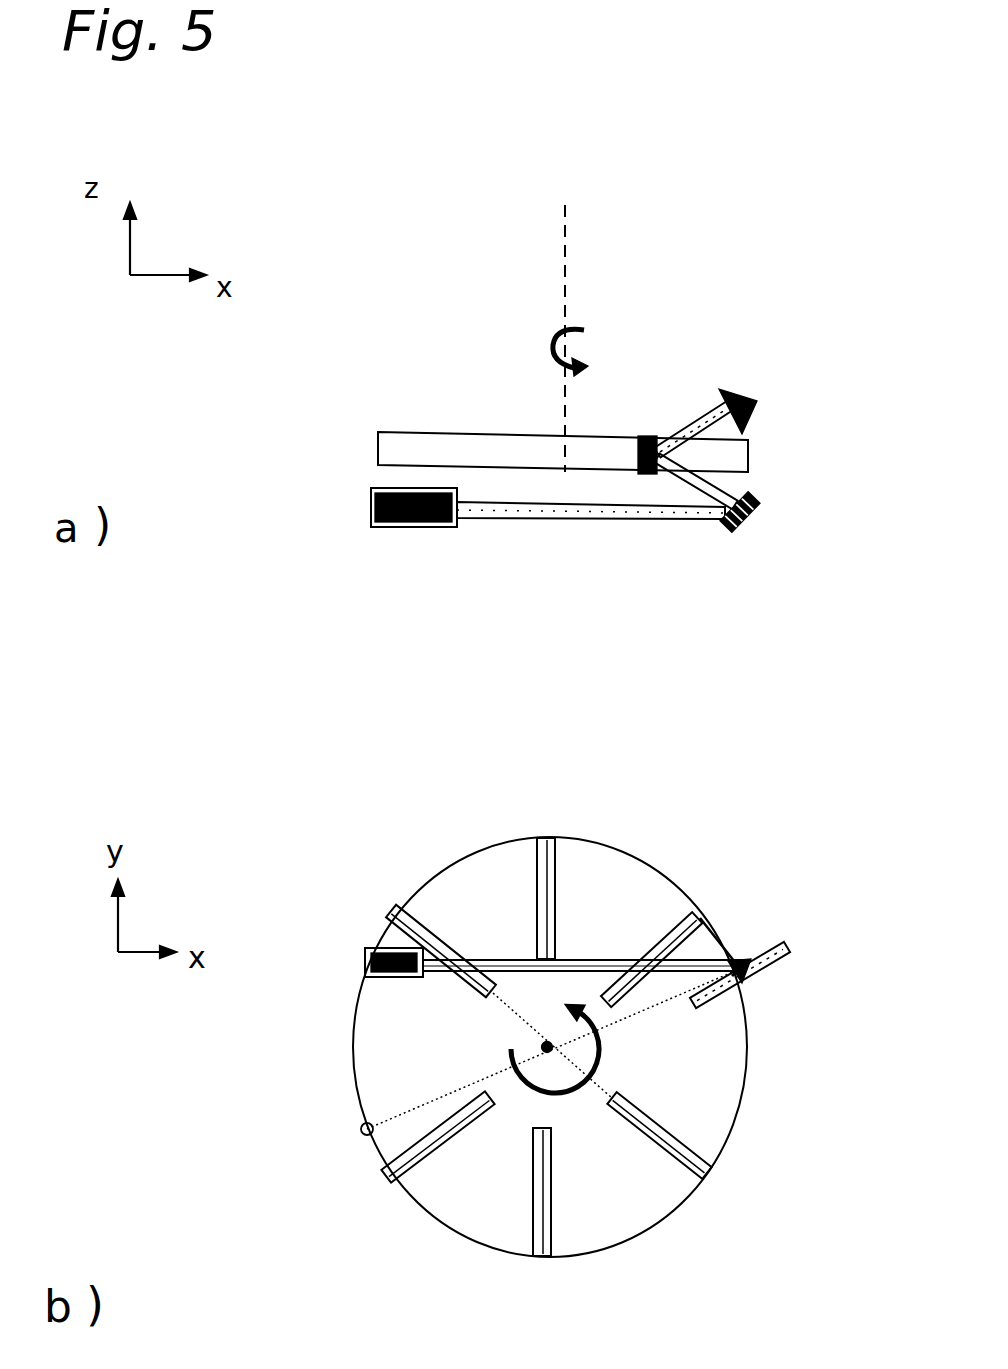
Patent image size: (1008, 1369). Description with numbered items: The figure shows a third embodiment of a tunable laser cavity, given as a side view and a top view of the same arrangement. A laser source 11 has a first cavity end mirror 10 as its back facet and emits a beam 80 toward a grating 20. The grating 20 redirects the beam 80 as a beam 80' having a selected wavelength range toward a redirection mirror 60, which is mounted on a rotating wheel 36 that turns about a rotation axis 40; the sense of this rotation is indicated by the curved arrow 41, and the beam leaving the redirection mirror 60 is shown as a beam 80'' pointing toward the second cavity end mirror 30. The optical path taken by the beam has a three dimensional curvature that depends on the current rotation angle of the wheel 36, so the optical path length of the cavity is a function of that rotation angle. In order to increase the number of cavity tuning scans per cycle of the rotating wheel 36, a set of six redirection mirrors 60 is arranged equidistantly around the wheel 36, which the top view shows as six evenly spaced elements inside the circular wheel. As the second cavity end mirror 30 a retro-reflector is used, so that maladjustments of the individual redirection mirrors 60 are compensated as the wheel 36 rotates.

The first cavity end mirror 10 is at (368, 507).
The laser source 11 is at (413, 528).
The grating 20 is at (750, 528).
The second cavity end mirror 30 is at (760, 410).
The rotating wheel 36 is at (448, 456).
The rotation axis 40 is at (572, 238).
The rotation direction 41 is at (556, 345).
The redirection mirror 60 is at (648, 434).
The beam 80 is at (631, 755).
The redirected beam 80' is at (624, 712).
The deflected light beam 80'' is at (721, 389).